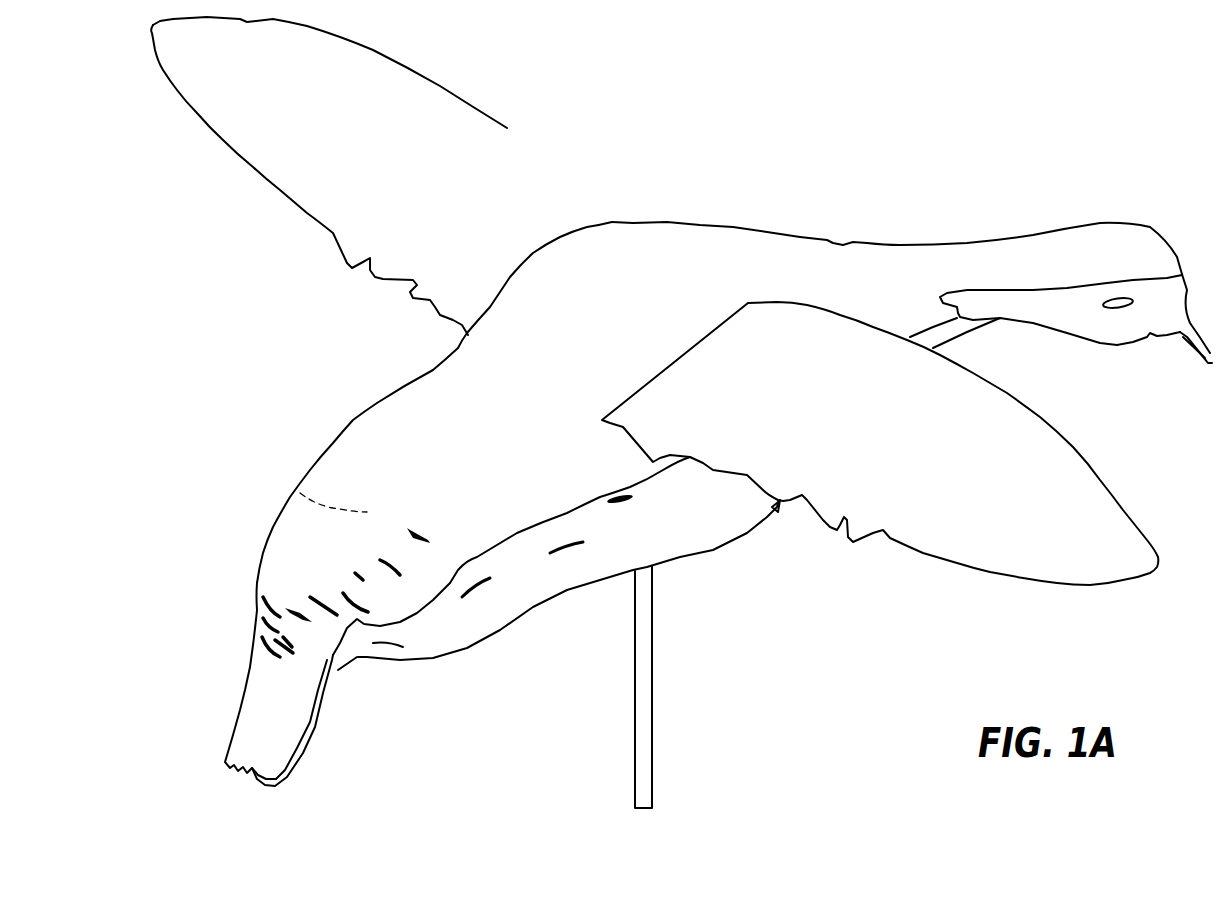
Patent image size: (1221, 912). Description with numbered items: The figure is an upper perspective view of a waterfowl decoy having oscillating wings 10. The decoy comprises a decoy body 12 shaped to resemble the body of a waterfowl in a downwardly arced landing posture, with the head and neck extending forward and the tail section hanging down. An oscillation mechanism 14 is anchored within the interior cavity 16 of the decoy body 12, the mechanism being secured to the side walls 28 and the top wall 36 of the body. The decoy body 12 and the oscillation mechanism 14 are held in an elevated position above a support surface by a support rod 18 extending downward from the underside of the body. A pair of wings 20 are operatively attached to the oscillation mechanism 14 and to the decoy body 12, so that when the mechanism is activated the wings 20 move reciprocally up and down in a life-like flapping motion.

The waterfowl decoy having oscillating wings 10 is at (618, 97).
The decoy body 12 is at (855, 238).
The oscillation mechanism 14 is at (470, 420).
The interior cavity 16 is at (300, 493).
The support rod 18 is at (652, 760).
The wings 20 is at (284, 180).
The side walls 28 is at (628, 470).
The top wall 36 is at (665, 245).